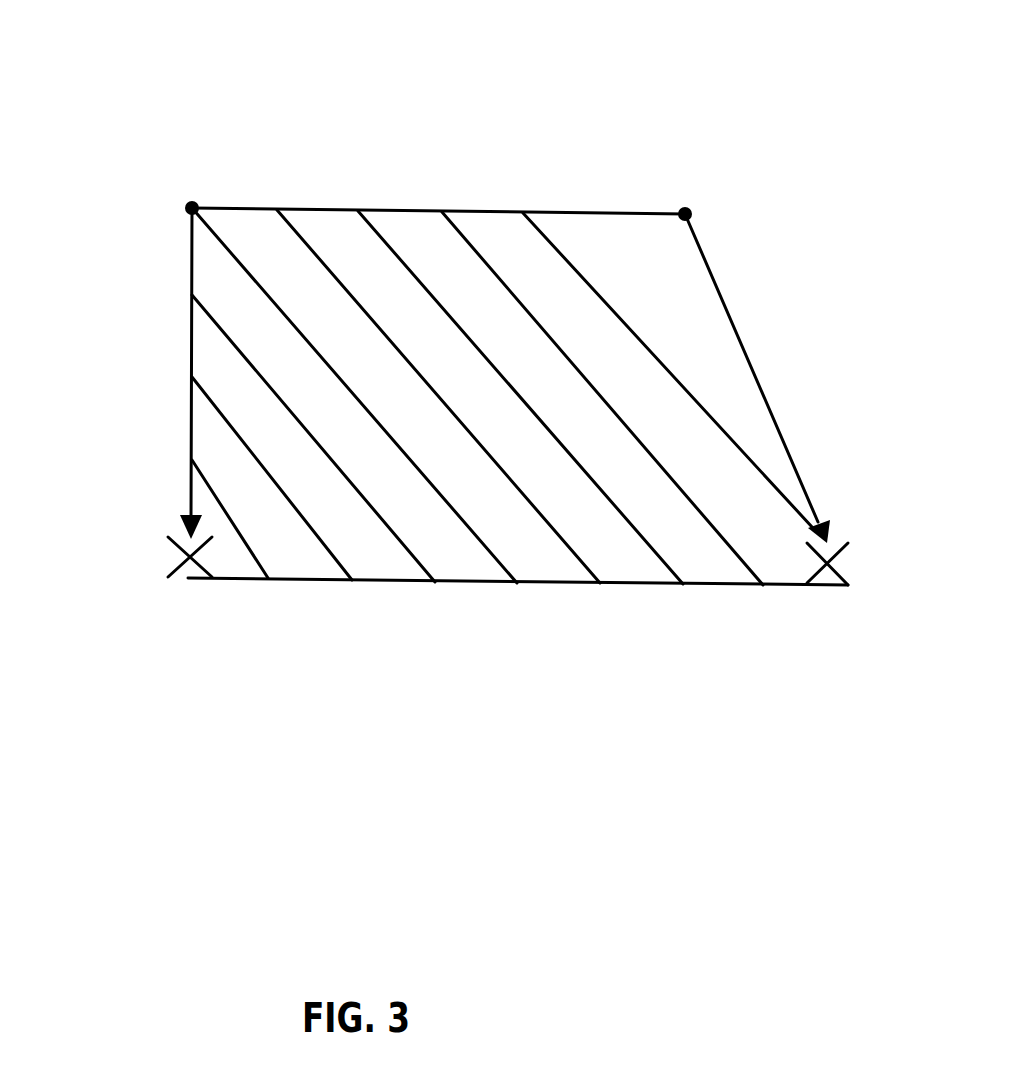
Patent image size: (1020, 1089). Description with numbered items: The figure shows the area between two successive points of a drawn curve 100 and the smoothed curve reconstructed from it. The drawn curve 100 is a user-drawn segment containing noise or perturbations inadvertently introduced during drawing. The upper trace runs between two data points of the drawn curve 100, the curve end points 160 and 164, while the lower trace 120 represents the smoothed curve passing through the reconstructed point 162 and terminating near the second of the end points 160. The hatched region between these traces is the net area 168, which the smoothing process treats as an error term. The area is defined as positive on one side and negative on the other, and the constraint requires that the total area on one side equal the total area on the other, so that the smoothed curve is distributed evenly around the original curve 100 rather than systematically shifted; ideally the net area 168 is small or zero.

The drawn curve 100 is at (400, 196).
The bottom surface of structure 120 is at (518, 598).
The curve end point 160 is at (190, 208).
The reconstructed point 162 is at (188, 557).
The curve end point 164 is at (685, 214).
The net area 168 is at (505, 396).